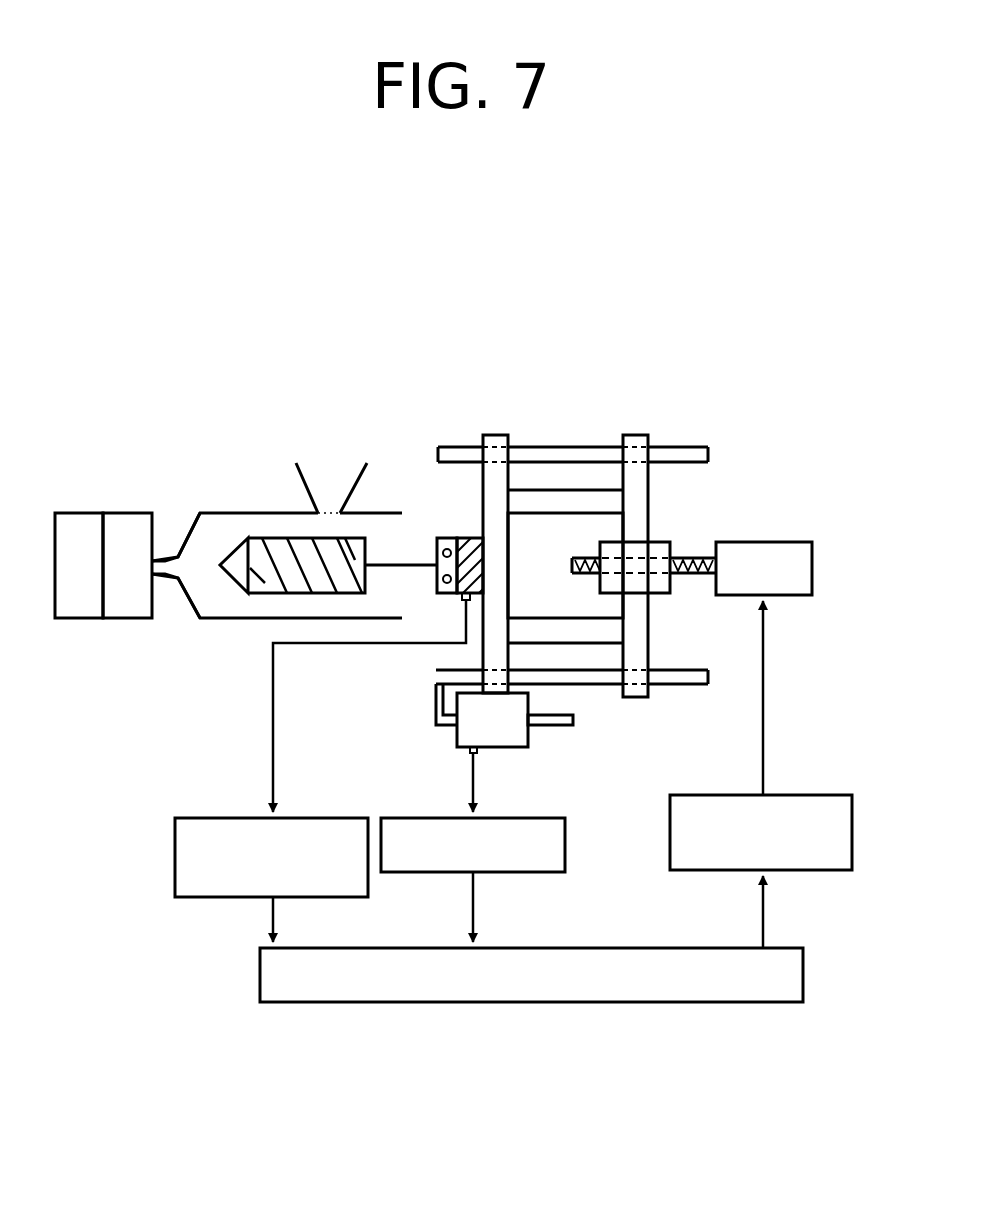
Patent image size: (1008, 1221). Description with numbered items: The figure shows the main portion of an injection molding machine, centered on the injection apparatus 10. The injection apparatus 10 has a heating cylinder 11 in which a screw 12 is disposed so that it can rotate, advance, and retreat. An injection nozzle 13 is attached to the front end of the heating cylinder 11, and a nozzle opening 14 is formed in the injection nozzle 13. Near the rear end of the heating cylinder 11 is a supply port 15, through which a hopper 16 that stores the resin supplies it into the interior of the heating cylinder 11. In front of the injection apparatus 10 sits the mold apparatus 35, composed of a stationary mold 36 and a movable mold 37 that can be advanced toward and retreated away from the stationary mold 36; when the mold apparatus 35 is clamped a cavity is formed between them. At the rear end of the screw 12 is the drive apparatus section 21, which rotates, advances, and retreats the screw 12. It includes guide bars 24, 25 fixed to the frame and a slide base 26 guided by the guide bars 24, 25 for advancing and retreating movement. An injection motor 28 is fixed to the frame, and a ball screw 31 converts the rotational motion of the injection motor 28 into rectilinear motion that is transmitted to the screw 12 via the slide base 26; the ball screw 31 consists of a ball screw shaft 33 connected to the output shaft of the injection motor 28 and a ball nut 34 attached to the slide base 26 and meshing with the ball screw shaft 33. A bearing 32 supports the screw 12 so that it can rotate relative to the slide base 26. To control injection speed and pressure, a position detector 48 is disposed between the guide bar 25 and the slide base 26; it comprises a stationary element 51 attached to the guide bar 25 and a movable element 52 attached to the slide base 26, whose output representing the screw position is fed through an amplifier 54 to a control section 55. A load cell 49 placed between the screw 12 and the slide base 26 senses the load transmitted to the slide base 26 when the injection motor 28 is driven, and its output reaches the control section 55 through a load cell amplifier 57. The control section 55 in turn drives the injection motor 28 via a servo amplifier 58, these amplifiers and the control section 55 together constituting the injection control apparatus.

The injection apparatus 10 is at (385, 420).
The heating cylinder 11 is at (238, 620).
The screw 12 is at (287, 597).
The injection nozzle 13 is at (163, 575).
The nozzle opening 14 is at (172, 562).
The supply port 15 is at (333, 513).
The hopper 16 is at (327, 457).
The drive apparatus section 21 is at (598, 423).
The guide bar 24 is at (453, 447).
The guide bar 25 is at (675, 684).
The slide base 26 is at (648, 631).
The injection motor 28 is at (797, 542).
The ball screw 31 is at (748, 444).
The bearing 32 is at (440, 538).
The ball screw shaft 33 is at (693, 560).
The ball nut 34 is at (660, 542).
The mold apparatus 35 is at (150, 706).
The stationary mold 36 is at (128, 620).
The movable mold 37 is at (73, 620).
The position detector 48 is at (428, 706).
The load cell 49 is at (470, 538).
The stationary element 51 is at (563, 725).
The movable element 52 is at (518, 747).
The amplifier 54 is at (565, 838).
The control section 55 is at (260, 968).
The load cell amplifier 57 is at (175, 842).
The servo amplifier 58 is at (813, 795).